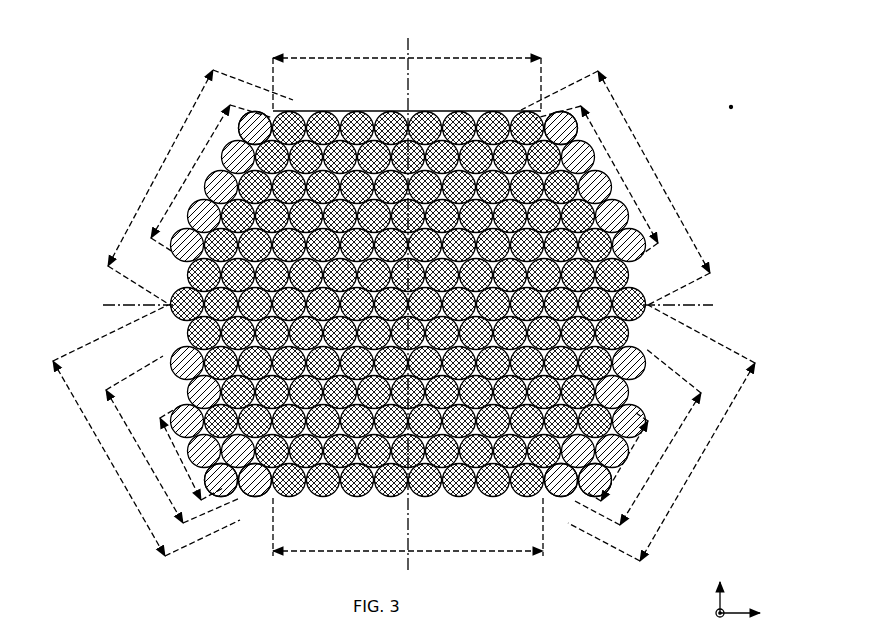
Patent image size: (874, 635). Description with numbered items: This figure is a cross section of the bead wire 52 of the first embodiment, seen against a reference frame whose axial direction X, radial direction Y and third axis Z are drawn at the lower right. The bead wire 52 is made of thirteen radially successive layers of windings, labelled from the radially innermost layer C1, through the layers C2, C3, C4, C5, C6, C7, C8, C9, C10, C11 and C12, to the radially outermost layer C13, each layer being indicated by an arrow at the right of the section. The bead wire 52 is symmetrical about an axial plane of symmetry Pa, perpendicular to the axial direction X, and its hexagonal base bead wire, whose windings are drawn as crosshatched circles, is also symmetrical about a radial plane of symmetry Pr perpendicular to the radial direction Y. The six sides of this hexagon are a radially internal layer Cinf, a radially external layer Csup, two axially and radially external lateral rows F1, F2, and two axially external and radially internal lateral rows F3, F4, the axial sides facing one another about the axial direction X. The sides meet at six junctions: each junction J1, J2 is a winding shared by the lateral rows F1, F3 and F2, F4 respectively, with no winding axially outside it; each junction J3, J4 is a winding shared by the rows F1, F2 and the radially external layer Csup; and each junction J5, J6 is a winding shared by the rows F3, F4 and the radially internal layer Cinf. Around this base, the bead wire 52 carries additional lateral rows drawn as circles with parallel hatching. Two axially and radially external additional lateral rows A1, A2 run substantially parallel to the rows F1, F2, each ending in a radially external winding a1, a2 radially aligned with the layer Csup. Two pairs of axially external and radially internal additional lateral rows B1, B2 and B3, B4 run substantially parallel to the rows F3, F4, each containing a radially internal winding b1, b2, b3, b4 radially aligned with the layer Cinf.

The bead wire 52 is at (723, 98).
The radially innermost layer C1 is at (752, 478).
The second radial layer C2 is at (752, 448).
The third radial layer C3 is at (752, 419).
The fourth radial layer C4 is at (752, 390).
The fifth radial layer C5 is at (752, 360).
The sixth radial layer C6 is at (752, 331).
The seventh radial layer C7 is at (752, 302).
The eighth radial layer C8 is at (752, 272).
The ninth radial layer C9 is at (752, 243).
The tenth radial layer C10 is at (752, 214).
The eleventh radial layer C11 is at (752, 185).
The twelfth radial layer C12 is at (752, 155).
The radially outermost layer C13 is at (752, 126).
The axial plane of symmetry Pa is at (404, 57).
The radial plane of symmetry Pr is at (125, 297).
The radially external winding a1 is at (250, 104).
The radially external winding a2 is at (560, 104).
The radially internal winding b1 is at (228, 490).
The radially internal winding b2 is at (560, 490).
The radially internal winding b3 is at (200, 490).
The radially internal winding b4 is at (595, 495).
The junction J1 is at (160, 300).
The junction J2 is at (636, 292).
The junction J3 is at (298, 104).
The junction J4 is at (515, 103).
The junction J5 is at (310, 490).
The junction J6 is at (500, 490).
The radially external layer Csup is at (407, 94).
The radially internal layer Cinf is at (408, 527).
The axially and radially external lateral row F1 is at (200, 187).
The axially and radially external lateral row F2 is at (615, 188).
The axially external and radially internal lateral row F3 is at (146, 430).
The axially external and radially internal lateral row F4 is at (661, 433).
The axially and radially external additional lateral row A1 is at (212, 178).
The axially and radially external additional lateral row A2 is at (597, 180).
The axially external and radially internal additional lateral row B1 is at (173, 439).
The axially external and radially internal additional lateral row B2 is at (637, 436).
The axially external and radially internal additional lateral row B3 is at (188, 453).
The axially external and radially internal additional lateral row B4 is at (618, 457).
The axial direction X is at (749, 614).
The radial direction Y is at (733, 590).
The circumferential direction Z is at (709, 614).